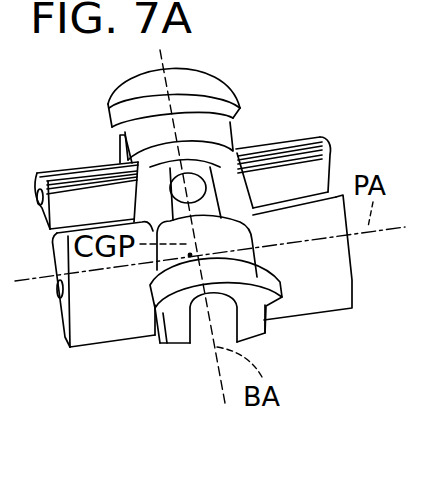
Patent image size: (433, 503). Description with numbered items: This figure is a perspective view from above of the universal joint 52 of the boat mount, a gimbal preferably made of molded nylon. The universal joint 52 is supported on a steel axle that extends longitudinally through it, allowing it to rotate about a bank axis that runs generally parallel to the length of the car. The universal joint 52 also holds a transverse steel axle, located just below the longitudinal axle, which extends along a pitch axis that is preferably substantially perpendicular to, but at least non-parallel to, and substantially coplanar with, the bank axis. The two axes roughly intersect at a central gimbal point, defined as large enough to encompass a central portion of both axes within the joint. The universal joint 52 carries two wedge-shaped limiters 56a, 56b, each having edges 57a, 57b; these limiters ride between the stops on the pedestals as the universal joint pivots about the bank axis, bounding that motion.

The universal joint 52 is at (118, 160).
The wedge-shaped limiter 56a is at (280, 276).
The wedge-shaped limiter 56b is at (207, 80).
The edge 57a is at (112, 128).
The edge 57b is at (240, 104).